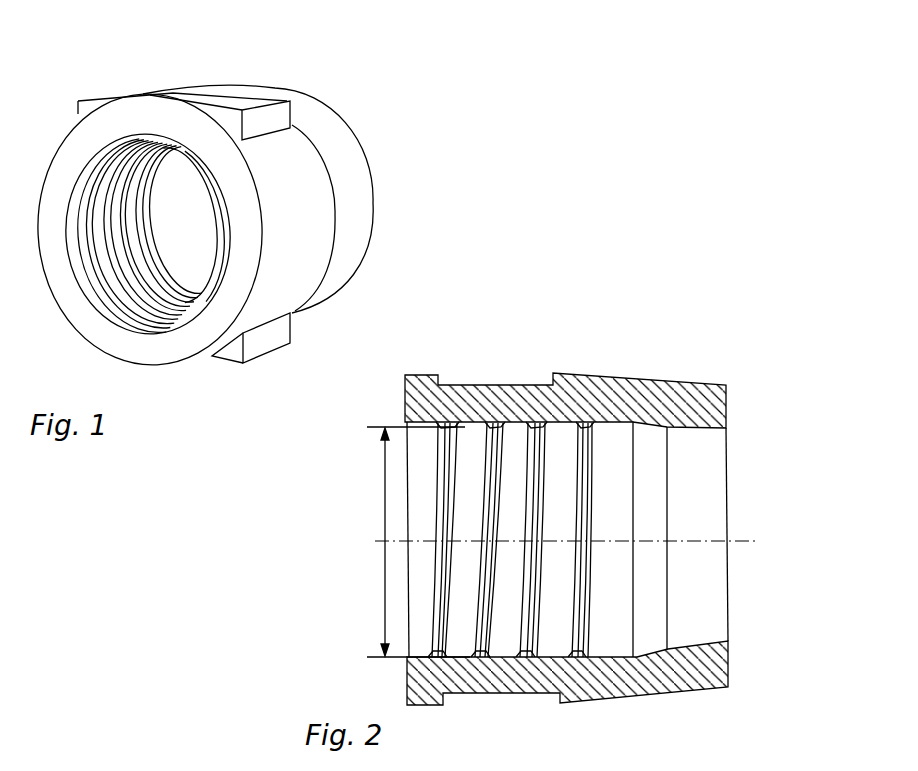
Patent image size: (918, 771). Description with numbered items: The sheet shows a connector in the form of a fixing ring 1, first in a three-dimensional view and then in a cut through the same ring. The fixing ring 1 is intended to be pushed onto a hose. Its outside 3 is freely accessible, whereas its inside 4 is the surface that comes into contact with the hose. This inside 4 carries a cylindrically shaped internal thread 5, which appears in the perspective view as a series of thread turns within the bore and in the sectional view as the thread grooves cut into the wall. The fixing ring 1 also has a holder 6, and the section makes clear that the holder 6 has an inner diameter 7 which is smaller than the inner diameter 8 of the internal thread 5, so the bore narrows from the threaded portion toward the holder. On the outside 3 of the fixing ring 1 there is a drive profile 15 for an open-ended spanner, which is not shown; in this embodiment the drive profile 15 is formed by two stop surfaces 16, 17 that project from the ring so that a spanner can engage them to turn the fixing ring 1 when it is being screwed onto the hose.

In FIG. 1, the fixing ring 1 is at (384, 94).
In FIG. 1, the outside 3 is at (322, 242).
In FIG. 1, the inside 4 is at (172, 300).
In FIG. 2, the internal thread 5 is at (540, 458).
In FIG. 2, the holder 6 is at (672, 441).
In FIG. 2, the inner diameter 7 is at (671, 647).
In FIG. 2, the inner diameter 8 is at (383, 502).
In FIG. 1, the drive profile 15 is at (270, 360).
In FIG. 1, the stop surface 16 is at (248, 106).
In FIG. 1, the stop surface 17 is at (230, 360).